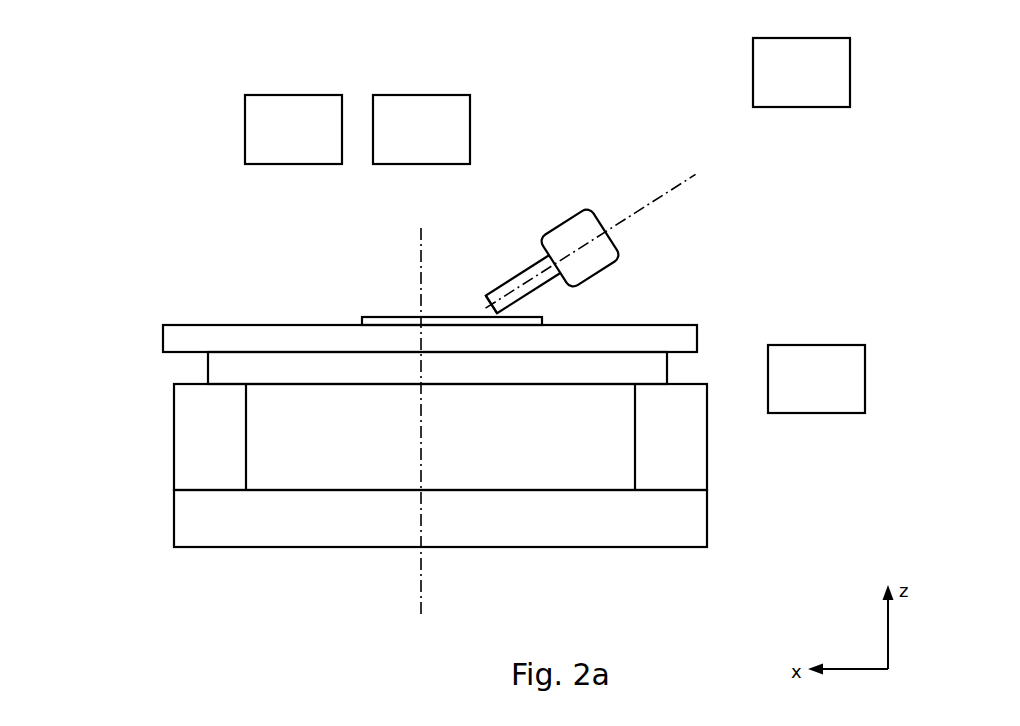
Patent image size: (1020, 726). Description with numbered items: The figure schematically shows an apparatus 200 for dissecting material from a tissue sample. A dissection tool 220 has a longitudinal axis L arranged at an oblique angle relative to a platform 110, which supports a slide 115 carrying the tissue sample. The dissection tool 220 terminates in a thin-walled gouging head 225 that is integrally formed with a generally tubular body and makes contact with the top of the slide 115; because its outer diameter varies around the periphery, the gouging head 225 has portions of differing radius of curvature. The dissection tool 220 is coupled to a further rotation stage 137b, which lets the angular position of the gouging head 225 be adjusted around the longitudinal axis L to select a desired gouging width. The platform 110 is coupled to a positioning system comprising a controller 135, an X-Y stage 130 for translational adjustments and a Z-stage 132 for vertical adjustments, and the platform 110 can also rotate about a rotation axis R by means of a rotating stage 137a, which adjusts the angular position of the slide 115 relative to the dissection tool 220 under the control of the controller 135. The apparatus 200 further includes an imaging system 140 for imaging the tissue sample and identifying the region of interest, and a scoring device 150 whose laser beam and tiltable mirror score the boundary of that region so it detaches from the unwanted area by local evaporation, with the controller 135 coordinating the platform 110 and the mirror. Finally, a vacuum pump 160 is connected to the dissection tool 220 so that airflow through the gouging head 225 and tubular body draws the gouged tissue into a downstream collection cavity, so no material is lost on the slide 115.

The apparatus 200 is at (186, 107).
The imaging system 140 is at (271, 141).
The scoring device 150 is at (399, 141).
The vacuum pump 160 is at (779, 84).
The controller 135 is at (794, 391).
The platform 110 is at (192, 338).
The rotating stage 137a is at (223, 370).
The Z-stage 132 is at (223, 458).
The X-Y stage 130 is at (220, 529).
The slide 115 is at (390, 316).
The further rotation stage 137b is at (583, 226).
The dissection tool 220 is at (519, 270).
The gouging head 225 is at (492, 288).
The longitudinal axis L is at (643, 212).
The rotation axis R is at (420, 570).